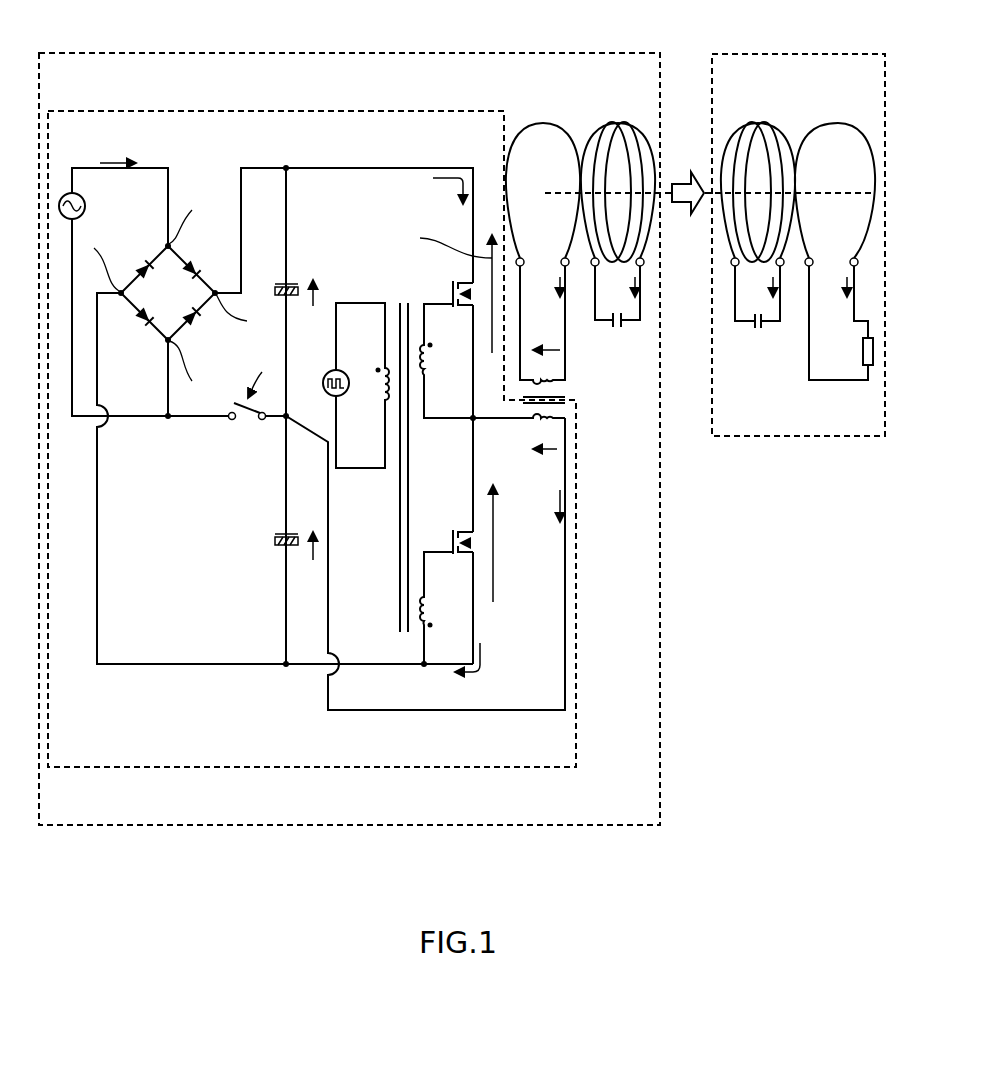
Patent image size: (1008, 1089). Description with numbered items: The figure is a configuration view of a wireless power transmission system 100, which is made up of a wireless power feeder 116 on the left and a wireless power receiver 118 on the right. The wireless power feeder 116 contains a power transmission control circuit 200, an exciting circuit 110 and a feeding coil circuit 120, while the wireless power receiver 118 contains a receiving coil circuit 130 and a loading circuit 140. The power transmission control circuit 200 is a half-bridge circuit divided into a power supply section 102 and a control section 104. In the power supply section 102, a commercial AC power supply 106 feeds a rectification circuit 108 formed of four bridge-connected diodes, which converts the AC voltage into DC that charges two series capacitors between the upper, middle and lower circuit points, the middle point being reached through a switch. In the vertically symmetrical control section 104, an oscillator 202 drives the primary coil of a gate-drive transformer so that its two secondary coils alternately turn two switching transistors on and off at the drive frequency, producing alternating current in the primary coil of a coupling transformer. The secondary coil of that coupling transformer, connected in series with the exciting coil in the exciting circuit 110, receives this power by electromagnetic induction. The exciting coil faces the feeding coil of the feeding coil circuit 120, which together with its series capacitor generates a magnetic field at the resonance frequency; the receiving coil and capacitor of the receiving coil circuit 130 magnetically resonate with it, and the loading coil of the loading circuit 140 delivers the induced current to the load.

The wireless power transmission system 100 is at (478, 882).
The power supply section 102 is at (288, 716).
The control section 104 is at (575, 716).
The AC power supply 106 is at (86, 208).
The rectification circuit 108 is at (220, 427).
The exciting circuit 110 is at (573, 104).
The wireless power feeder 116 is at (348, 53).
The wireless power receiver 118 is at (798, 54).
The feeding coil circuit 120 is at (652, 104).
The receiving coil circuit 130 is at (791, 104).
The loading circuit 140 is at (875, 104).
The power transmission control circuit 200 is at (275, 111).
The oscillator 202 is at (343, 371).